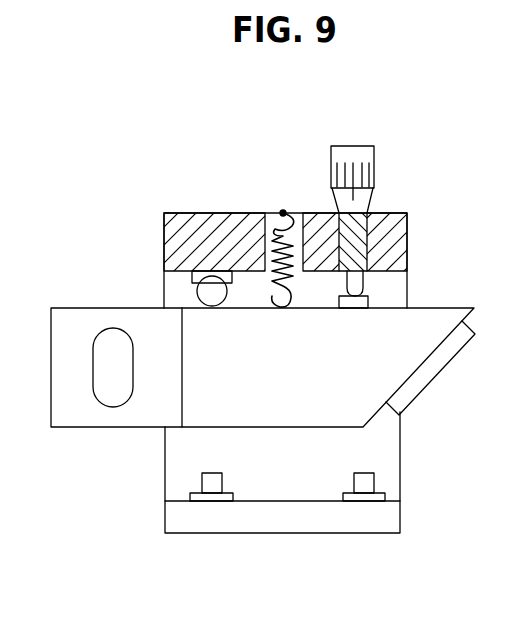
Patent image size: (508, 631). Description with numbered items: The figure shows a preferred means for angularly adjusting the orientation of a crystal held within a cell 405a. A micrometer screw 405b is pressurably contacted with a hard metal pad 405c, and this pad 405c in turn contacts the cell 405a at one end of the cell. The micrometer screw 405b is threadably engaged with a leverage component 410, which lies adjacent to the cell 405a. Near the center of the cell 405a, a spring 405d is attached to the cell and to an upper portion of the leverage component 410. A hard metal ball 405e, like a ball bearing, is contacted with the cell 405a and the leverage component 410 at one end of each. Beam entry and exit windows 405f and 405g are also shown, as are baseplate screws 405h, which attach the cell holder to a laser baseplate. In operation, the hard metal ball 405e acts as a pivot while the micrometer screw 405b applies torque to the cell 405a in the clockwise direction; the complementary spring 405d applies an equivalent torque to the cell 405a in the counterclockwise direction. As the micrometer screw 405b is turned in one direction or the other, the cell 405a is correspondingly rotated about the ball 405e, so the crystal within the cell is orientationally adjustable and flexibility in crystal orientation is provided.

The leverage component 410 is at (164, 232).
The cell 405a is at (444, 318).
The micrometer screw 405b is at (357, 146).
The hard metal pad 405c is at (370, 298).
The spring 405d is at (280, 212).
The hard metal ball 405e is at (200, 290).
The beam entry window 405f is at (112, 397).
The beam exit window 405g is at (430, 372).
The baseplate screws 405h is at (363, 486).